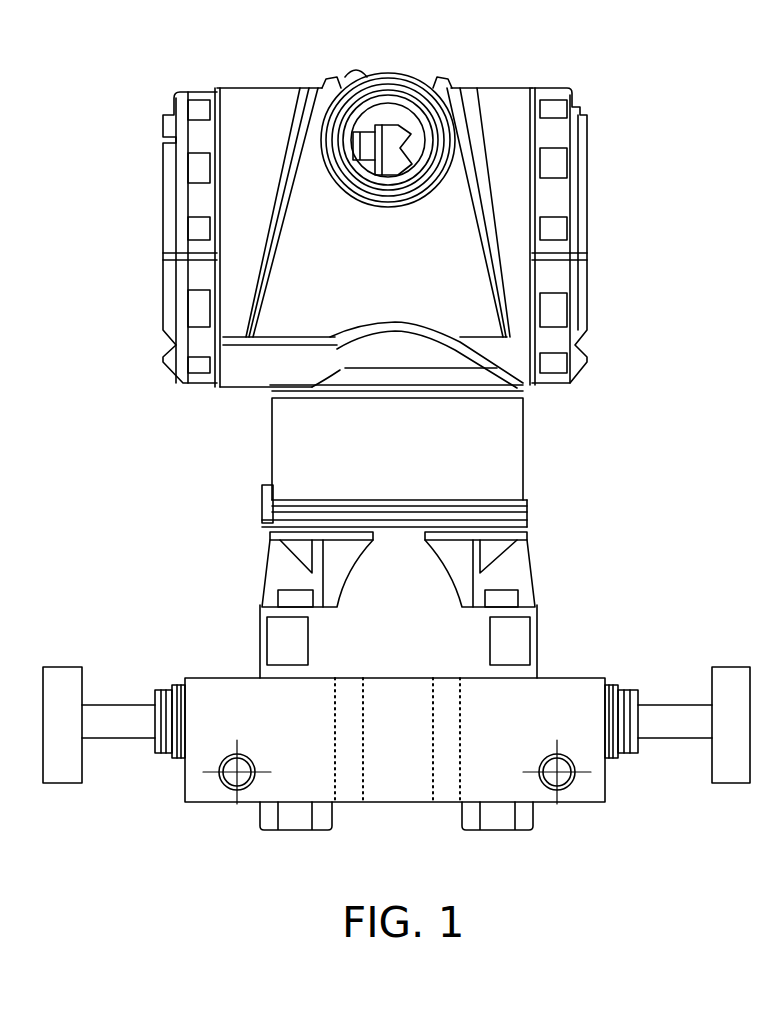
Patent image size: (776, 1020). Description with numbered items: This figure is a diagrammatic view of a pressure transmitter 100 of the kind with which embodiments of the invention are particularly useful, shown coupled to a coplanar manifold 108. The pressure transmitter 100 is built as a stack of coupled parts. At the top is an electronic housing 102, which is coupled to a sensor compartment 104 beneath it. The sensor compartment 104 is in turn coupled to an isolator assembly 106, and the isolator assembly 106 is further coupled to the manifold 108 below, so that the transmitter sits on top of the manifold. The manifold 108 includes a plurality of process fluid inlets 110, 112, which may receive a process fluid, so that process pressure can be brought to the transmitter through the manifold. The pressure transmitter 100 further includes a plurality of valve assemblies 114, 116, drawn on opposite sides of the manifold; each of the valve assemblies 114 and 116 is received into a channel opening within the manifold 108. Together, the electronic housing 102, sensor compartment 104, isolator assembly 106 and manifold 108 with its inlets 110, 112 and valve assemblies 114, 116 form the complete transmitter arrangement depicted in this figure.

The pressure transmitter 100 is at (493, 85).
The electronic housing 102 is at (255, 88).
The sensor compartment 104 is at (522, 415).
The isolator assembly 106 is at (260, 607).
The coplanar manifold 108 is at (588, 678).
The process fluid inlet 110 is at (345, 785).
The process fluid inlet 112 is at (450, 795).
The valve assembly 114 is at (158, 750).
The valve assembly 116 is at (610, 755).